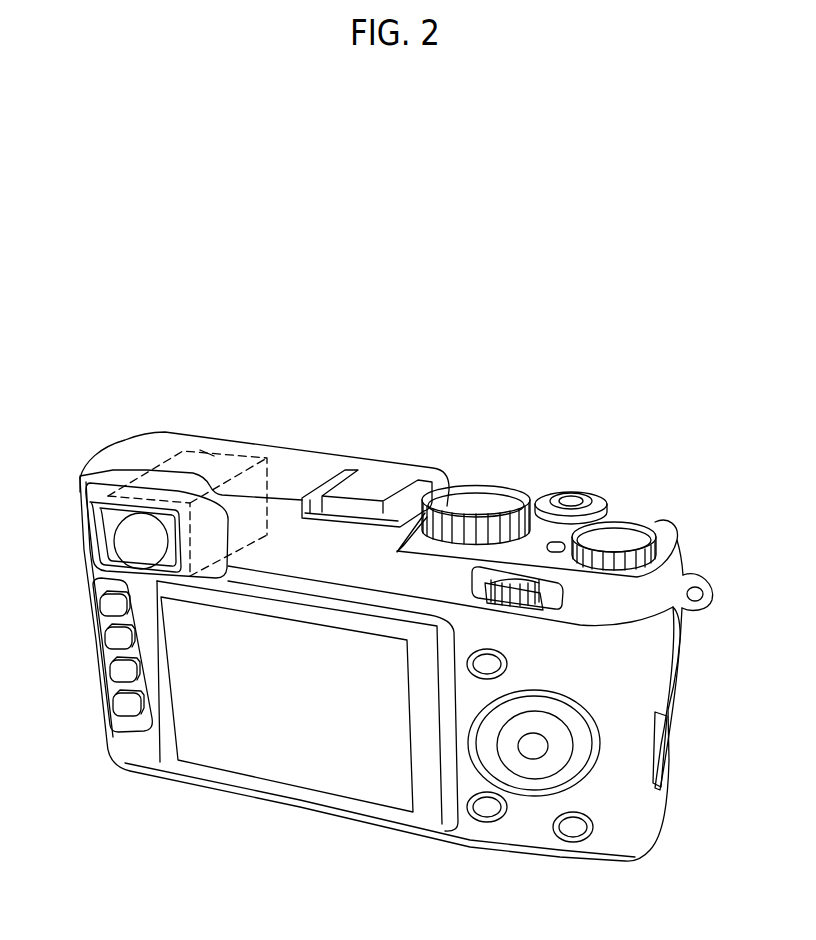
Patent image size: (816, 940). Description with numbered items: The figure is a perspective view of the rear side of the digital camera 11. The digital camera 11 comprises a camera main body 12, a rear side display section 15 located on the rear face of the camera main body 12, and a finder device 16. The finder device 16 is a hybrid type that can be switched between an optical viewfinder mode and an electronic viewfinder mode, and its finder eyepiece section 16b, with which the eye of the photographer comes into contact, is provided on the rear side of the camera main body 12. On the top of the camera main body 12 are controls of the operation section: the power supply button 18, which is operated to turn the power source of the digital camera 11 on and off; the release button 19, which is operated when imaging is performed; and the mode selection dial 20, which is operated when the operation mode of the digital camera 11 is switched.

The digital camera 11 is at (632, 440).
The camera main body 12 is at (682, 655).
The rear side display section 15 is at (278, 747).
The finder device 16 is at (207, 452).
The finder eyepiece section 16b is at (128, 542).
The power supply button 18 is at (642, 520).
The release button 19 is at (570, 497).
The mode selection dial 20 is at (476, 493).